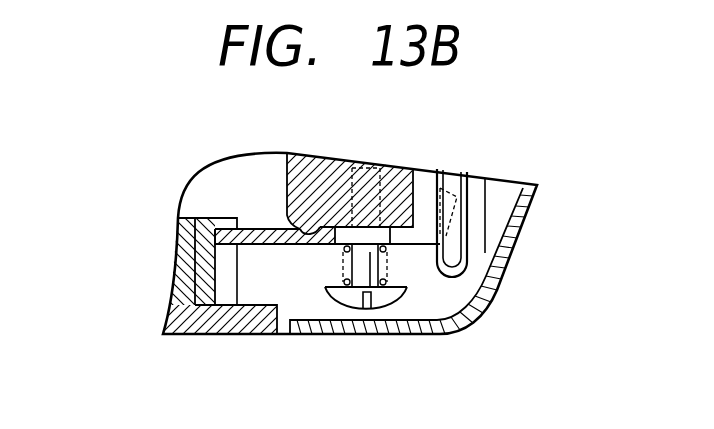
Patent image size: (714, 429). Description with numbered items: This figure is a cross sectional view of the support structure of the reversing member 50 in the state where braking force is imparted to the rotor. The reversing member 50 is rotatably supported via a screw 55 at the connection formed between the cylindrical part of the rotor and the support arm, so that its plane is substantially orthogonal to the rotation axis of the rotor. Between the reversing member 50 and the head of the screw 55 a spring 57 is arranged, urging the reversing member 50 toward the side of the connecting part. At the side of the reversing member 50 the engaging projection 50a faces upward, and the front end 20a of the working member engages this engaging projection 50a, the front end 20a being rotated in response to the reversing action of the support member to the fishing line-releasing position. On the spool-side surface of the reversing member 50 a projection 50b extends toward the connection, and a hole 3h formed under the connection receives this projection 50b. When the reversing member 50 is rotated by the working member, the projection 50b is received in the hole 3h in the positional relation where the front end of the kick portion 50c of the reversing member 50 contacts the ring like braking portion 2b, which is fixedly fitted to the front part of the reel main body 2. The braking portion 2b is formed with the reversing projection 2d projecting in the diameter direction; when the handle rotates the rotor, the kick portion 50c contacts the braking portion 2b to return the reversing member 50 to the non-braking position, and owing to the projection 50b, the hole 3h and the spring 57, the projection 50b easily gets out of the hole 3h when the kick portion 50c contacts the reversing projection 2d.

The reel main body 2 is at (172, 303).
The braking portion 2b is at (193, 256).
The reversing projection 2d is at (222, 220).
The hole 3h is at (306, 245).
The front end of the working member 20a is at (457, 240).
The reversing member 50 is at (271, 240).
The engaging projection 50a is at (414, 192).
The projection 50b is at (314, 227).
The kick portion 50c is at (172, 220).
The screw 55 is at (380, 297).
The spring 57 is at (387, 267).